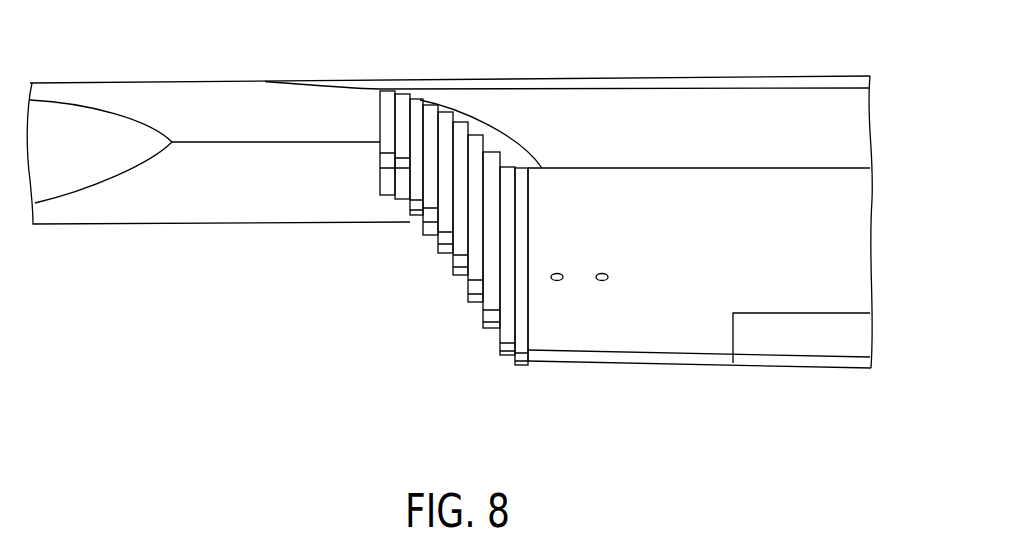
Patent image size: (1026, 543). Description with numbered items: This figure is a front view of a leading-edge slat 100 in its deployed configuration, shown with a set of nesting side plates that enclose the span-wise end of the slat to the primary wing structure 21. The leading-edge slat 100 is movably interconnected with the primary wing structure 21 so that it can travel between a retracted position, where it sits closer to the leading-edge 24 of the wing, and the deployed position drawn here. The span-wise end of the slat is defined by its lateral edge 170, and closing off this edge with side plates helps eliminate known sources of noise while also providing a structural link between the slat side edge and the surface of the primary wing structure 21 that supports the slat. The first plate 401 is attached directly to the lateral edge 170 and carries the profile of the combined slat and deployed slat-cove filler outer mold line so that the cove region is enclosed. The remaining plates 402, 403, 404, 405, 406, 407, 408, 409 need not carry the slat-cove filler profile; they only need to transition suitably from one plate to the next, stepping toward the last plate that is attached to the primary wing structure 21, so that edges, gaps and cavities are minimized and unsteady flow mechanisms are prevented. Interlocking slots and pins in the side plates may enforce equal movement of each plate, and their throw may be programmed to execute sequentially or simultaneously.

The primary wing structure 21 is at (408, 79).
The leading-edge 24 is at (667, 98).
The leading-edge slat 100 is at (692, 335).
The lateral edge 170 is at (524, 201).
The first plate 401 is at (520, 364).
The side plate 402 is at (508, 355).
The side plate 403 is at (493, 331).
The side plate 404 is at (478, 302).
The side plate 405 is at (460, 275).
The side plate 406 is at (442, 250).
The side plate 407 is at (417, 216).
The side plate 408 is at (402, 196).
The side plate 409 is at (390, 186).